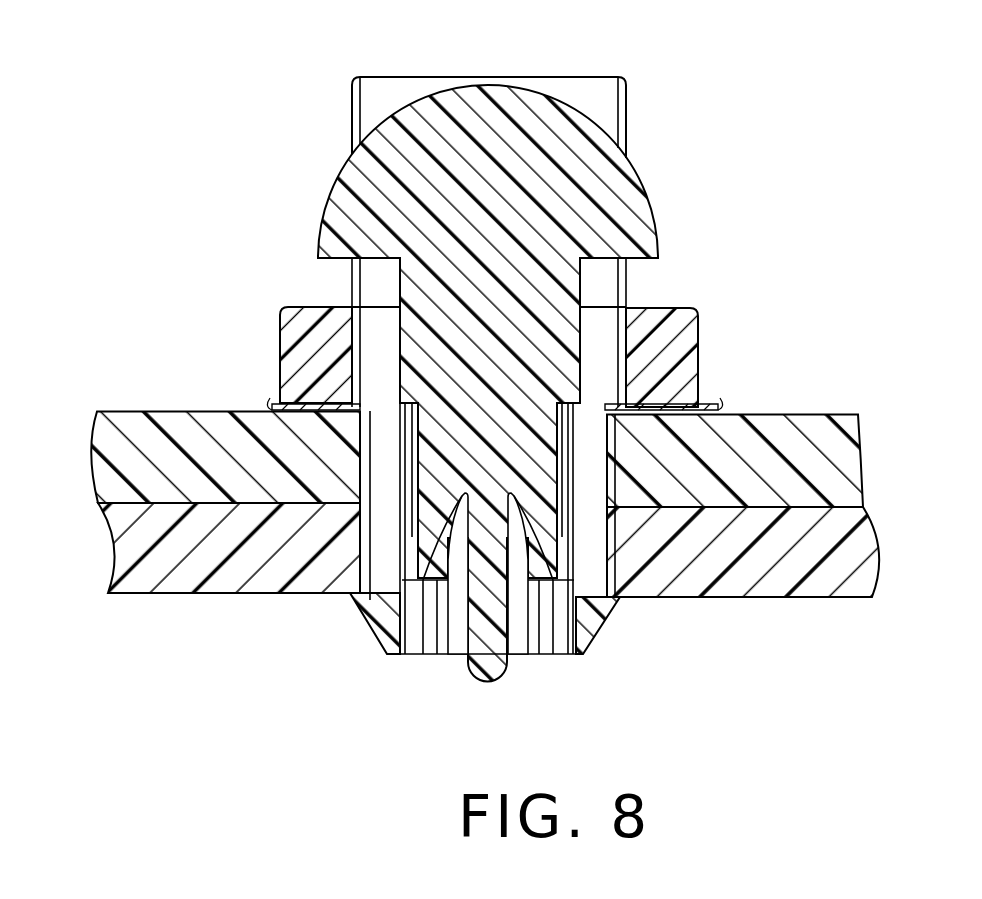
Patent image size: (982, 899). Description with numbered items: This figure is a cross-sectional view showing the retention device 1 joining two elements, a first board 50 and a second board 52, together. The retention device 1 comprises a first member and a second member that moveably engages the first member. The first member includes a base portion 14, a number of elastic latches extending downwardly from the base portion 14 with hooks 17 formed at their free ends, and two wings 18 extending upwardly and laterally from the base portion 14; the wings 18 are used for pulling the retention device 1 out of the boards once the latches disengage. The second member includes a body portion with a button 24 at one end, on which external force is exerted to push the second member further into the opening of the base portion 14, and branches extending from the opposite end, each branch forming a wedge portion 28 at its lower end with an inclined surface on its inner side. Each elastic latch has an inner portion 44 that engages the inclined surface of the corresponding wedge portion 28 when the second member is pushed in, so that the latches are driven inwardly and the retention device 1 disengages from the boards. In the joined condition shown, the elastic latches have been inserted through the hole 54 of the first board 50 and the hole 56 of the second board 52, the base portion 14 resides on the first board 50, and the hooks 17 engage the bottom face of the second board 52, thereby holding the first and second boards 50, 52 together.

The retention device 1 is at (543, 380).
The base portion 14 is at (697, 318).
The hooks 17 is at (370, 623).
The wings 18 is at (565, 78).
The button 24 is at (636, 166).
The wedge portion 28 is at (582, 650).
The inner portion 44 is at (535, 590).
The first board 50 is at (825, 398).
The second board 52 is at (795, 630).
The hole of the first board 54 is at (693, 402).
The hole of the second board 56 is at (612, 562).